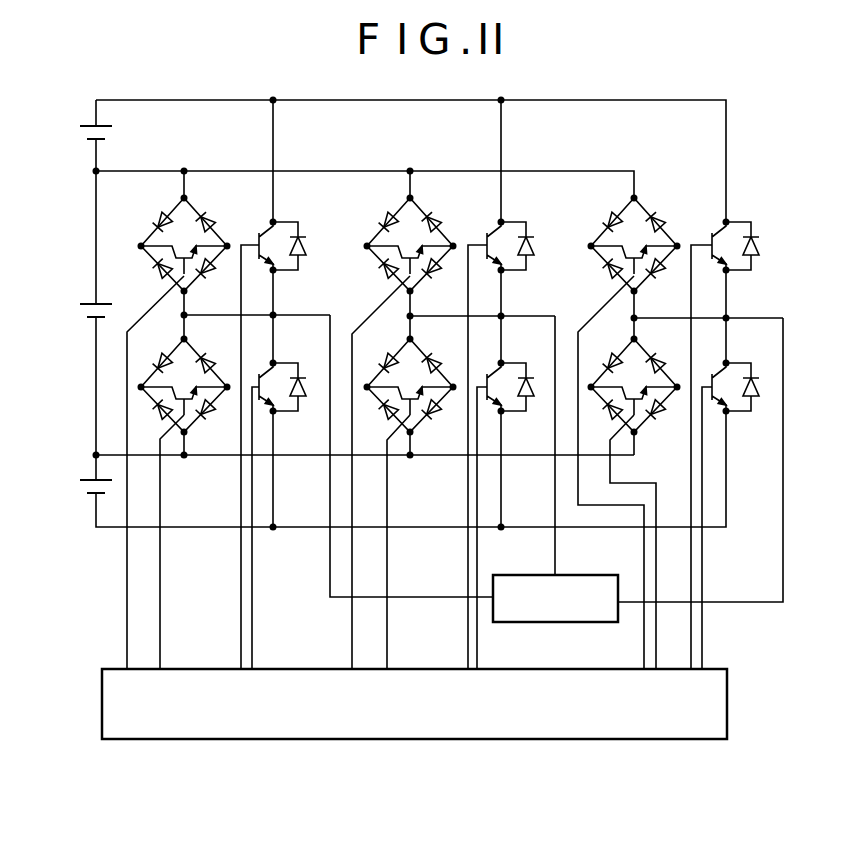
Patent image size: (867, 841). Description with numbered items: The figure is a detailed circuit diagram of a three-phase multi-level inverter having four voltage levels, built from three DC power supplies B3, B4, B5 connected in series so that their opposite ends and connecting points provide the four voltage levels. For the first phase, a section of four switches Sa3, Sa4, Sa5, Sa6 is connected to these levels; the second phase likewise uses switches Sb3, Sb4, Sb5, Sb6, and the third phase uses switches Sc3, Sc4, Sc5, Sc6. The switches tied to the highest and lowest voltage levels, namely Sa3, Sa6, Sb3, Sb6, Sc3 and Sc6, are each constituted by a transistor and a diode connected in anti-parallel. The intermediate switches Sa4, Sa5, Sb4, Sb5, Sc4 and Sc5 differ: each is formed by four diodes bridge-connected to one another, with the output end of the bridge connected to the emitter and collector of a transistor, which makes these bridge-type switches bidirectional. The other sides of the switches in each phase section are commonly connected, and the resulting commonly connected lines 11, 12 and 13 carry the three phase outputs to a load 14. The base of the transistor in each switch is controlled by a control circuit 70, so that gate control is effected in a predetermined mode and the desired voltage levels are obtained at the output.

The commonly connected line 11 is at (427, 597).
The commonly connected line 12 is at (555, 557).
The commonly connected line 13 is at (758, 602).
The load 14 is at (595, 622).
The control circuit 70 is at (588, 740).
The DC power supply B3 is at (80, 487).
The DC power supply B4 is at (80, 312).
The DC power supply B5 is at (80, 139).
The switch Sa3 is at (290, 422).
The switch Sa4 is at (184, 410).
The switch Sa5 is at (184, 218).
The switch Sa6 is at (291, 207).
The switch Sb3 is at (516, 422).
The switch Sb4 is at (410, 410).
The switch Sb5 is at (410, 218).
The switch Sb6 is at (517, 207).
The switch Sc3 is at (740, 419).
The switch Sc4 is at (634, 407).
The switch Sc5 is at (634, 218).
The switch Sc6 is at (741, 225).